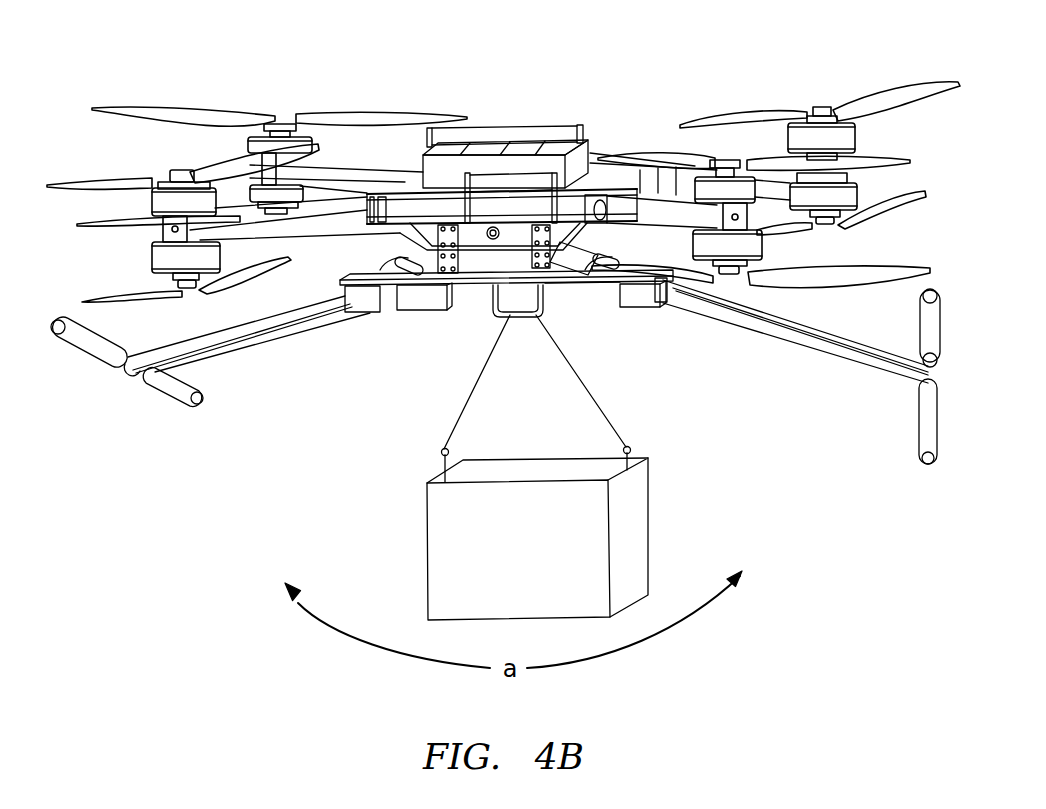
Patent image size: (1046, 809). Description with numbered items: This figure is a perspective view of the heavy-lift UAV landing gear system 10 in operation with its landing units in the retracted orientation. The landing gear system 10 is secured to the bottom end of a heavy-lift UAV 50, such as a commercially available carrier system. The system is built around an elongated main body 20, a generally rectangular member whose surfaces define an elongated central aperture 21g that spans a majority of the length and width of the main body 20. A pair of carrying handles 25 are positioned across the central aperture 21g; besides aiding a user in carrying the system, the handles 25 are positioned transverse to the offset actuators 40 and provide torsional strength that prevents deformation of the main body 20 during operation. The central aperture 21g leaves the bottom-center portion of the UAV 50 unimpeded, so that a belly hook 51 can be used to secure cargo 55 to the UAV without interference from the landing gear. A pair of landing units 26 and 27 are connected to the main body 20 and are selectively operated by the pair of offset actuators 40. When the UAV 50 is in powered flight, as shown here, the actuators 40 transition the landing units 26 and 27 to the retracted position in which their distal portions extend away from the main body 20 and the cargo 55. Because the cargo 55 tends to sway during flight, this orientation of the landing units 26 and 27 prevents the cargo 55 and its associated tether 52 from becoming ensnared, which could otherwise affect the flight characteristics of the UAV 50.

The landing gear system 10 is at (244, 83).
The heavy-lift UAV 50 is at (533, 117).
The carrying handles 25 is at (382, 266).
The main body 20 is at (481, 284).
The offset actuators 40 is at (417, 300).
The belly hook 51 is at (528, 315).
The central aperture 21g is at (572, 286).
The tether 52 is at (462, 411).
The landing unit 26 is at (241, 343).
The landing unit 27 is at (784, 337).
The cargo 55 is at (543, 557).